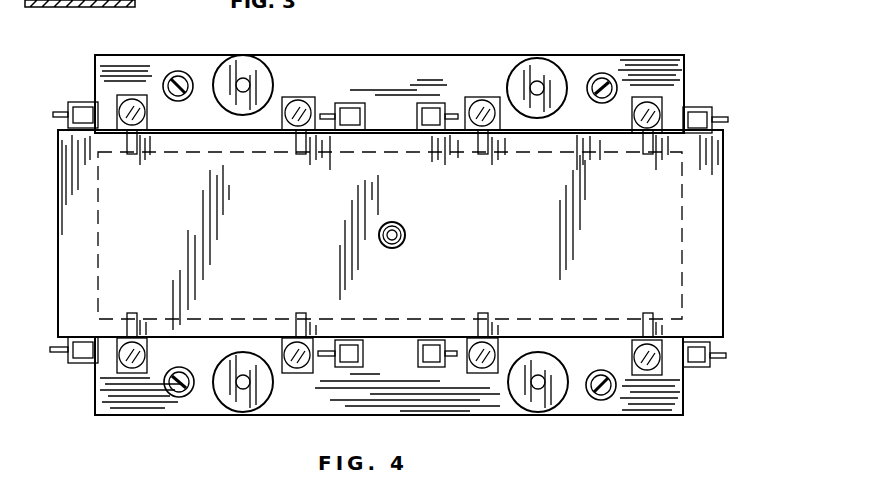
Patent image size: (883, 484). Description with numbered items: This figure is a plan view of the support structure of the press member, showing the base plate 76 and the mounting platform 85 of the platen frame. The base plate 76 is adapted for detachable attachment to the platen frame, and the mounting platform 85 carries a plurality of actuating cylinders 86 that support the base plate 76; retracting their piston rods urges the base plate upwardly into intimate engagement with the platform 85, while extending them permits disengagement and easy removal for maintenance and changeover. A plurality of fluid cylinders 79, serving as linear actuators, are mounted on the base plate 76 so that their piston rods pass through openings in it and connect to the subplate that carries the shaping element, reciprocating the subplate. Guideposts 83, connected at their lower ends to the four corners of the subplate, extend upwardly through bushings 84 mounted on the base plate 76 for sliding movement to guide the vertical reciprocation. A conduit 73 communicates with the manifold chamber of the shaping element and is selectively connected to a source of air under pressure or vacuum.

The conduit 73 is at (406, 233).
The base plate 76 is at (50, 8).
The fluid cylinders 79 is at (255, 62).
The guideposts 83 is at (176, 71).
The bushings 84 is at (604, 73).
The mounting platform 85 is at (55, 252).
The actuating cylinders 86 is at (117, 100).